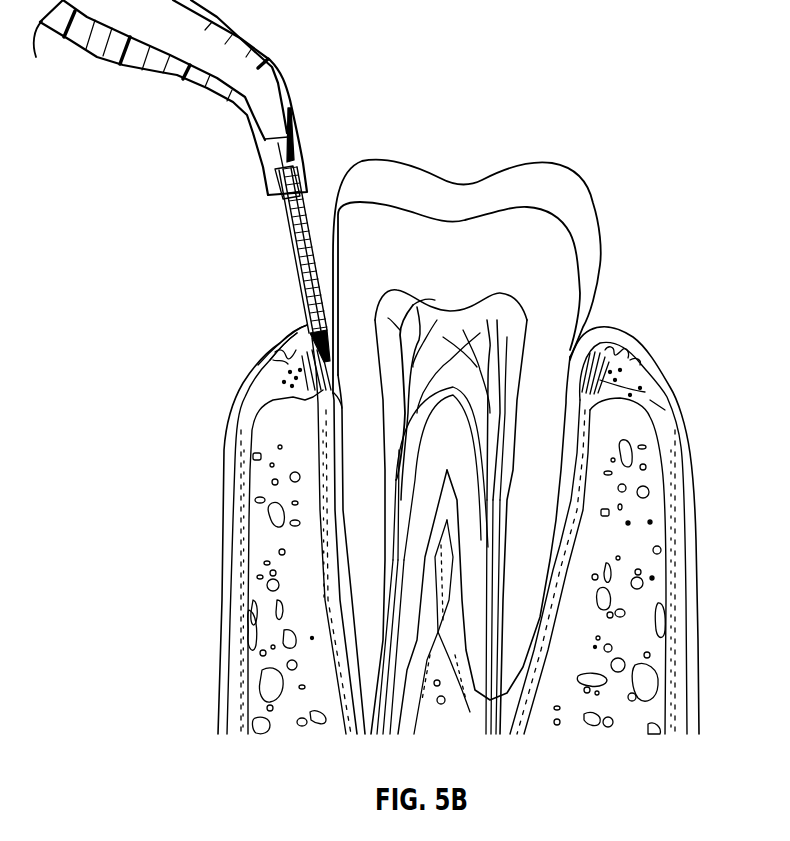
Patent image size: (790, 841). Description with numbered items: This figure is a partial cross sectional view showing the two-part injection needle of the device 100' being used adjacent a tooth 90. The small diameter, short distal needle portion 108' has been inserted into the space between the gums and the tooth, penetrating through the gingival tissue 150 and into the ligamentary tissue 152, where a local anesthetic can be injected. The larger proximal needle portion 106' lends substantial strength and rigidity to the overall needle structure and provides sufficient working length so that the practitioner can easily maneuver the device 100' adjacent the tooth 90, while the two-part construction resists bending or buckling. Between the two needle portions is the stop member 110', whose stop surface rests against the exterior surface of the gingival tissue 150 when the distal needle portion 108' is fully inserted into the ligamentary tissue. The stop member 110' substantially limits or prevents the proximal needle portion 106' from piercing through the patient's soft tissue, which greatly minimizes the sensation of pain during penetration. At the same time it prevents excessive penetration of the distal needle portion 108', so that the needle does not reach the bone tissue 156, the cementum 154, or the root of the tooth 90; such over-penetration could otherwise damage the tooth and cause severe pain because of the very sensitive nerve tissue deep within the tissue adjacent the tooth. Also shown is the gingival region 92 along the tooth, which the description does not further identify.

The device 100' is at (222, 99).
The proximal needle portion 106' is at (265, 250).
The stop member 110' is at (267, 311).
The distal needle portion 108' is at (250, 357).
The gingiva / gingival sulcus 92 is at (336, 395).
The tooth 90 is at (456, 160).
The gingival tissue 150 is at (223, 515).
The ligamentary tissue 152 is at (322, 517).
The cementum 154 is at (338, 555).
The bone tissue 156 is at (300, 583).